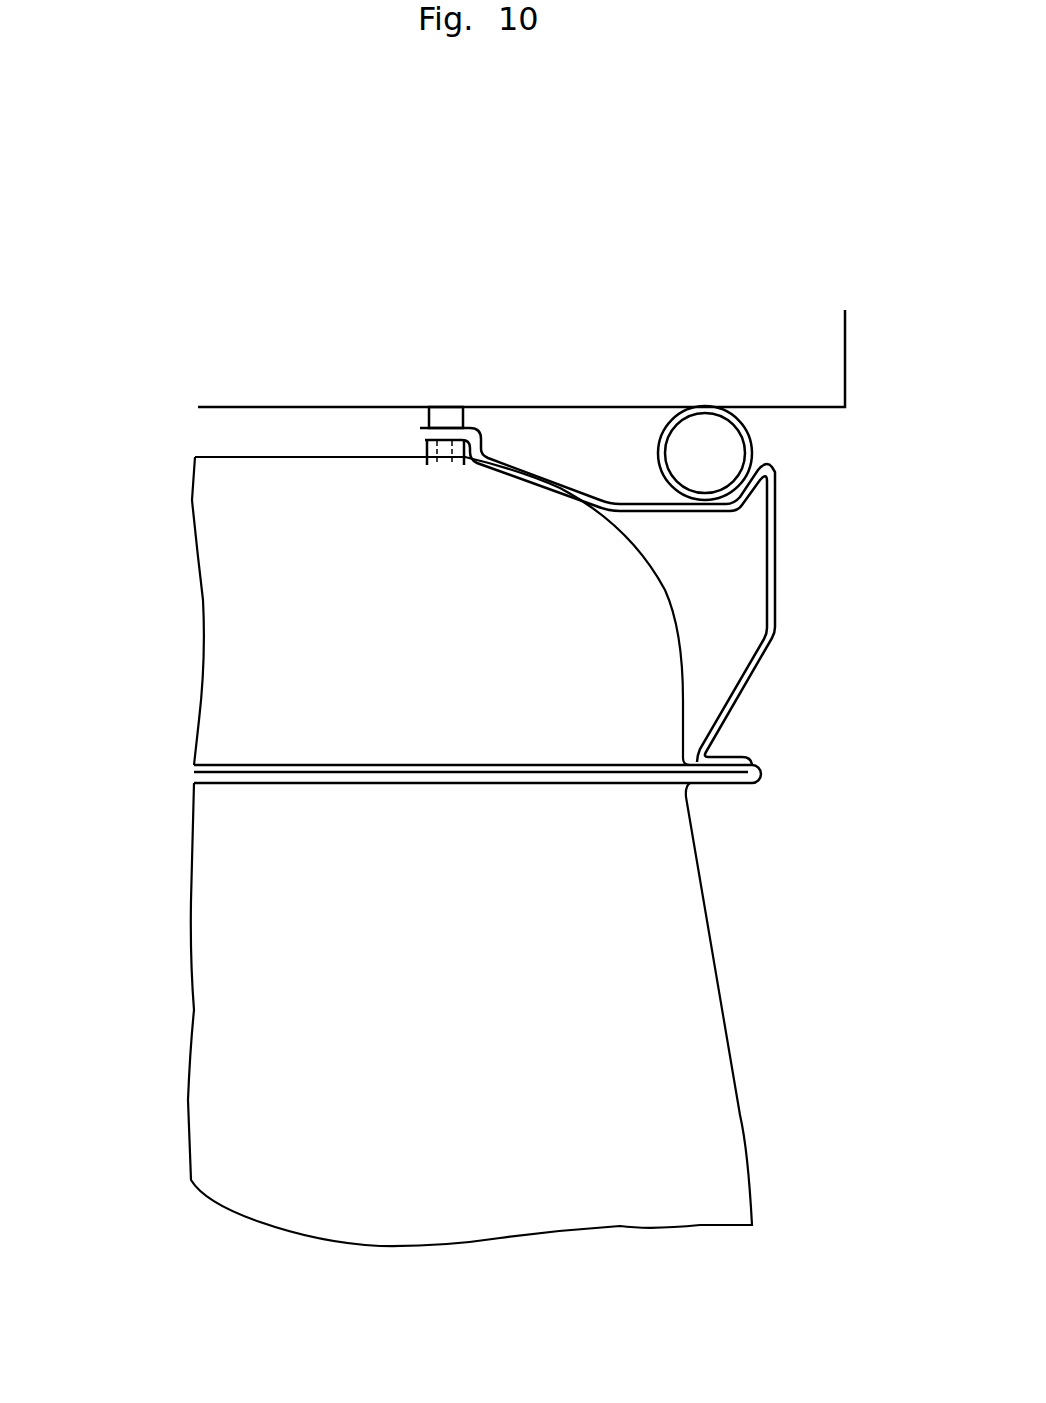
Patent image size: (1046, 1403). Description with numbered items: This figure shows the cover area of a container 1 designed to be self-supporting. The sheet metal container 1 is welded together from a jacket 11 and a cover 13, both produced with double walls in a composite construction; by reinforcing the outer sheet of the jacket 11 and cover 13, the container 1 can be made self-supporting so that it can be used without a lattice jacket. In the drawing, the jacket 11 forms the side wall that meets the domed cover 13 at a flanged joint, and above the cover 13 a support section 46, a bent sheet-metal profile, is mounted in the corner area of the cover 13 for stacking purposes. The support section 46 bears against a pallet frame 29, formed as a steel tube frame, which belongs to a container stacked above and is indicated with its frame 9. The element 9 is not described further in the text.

The sheet metal container 1 is at (175, 917).
The frame 9 is at (860, 358).
The jacket 11 is at (698, 1020).
The cover 13 is at (262, 619).
The pallet frame 29 is at (722, 442).
The support section 46 is at (773, 543).